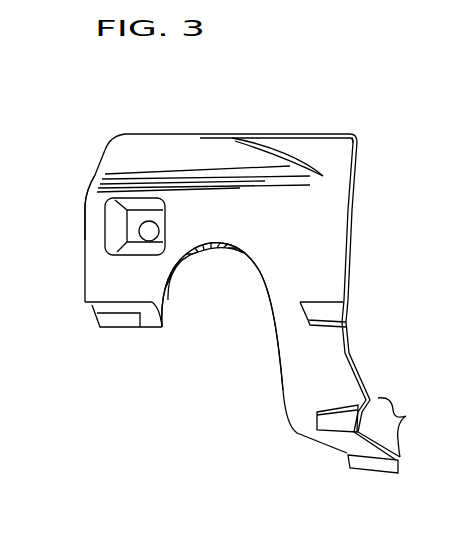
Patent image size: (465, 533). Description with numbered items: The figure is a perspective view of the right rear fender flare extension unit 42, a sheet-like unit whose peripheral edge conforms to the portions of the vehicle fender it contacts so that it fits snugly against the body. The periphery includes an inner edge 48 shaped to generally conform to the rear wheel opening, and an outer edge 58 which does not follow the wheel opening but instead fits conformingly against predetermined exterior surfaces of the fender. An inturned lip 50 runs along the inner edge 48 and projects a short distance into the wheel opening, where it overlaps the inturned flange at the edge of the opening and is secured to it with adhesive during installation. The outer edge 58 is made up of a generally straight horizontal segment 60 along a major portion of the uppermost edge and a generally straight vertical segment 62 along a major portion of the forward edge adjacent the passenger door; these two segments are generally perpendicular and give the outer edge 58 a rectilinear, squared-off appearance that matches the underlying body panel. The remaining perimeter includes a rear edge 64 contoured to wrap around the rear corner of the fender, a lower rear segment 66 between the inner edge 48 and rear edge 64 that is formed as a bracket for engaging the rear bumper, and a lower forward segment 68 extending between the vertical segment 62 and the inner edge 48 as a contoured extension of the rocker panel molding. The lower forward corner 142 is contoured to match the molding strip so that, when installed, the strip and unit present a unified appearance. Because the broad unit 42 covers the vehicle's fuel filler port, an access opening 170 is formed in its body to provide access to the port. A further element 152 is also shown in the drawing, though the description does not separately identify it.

The right rear extension unit 42 is at (322, 222).
The inner edge 48 is at (176, 283).
The inturned lip 50 is at (165, 273).
The outer edge 58 is at (358, 186).
The horizontal segment 60 is at (253, 135).
The vertical segment 62 is at (347, 266).
The rear edge 64 is at (82, 213).
The lower rear segment 66 is at (127, 328).
The lower forward segment 68 is at (375, 468).
The lower forward corner 142 is at (417, 427).
The mounting bracket 152 is at (340, 422).
The access opening 170 is at (110, 223).